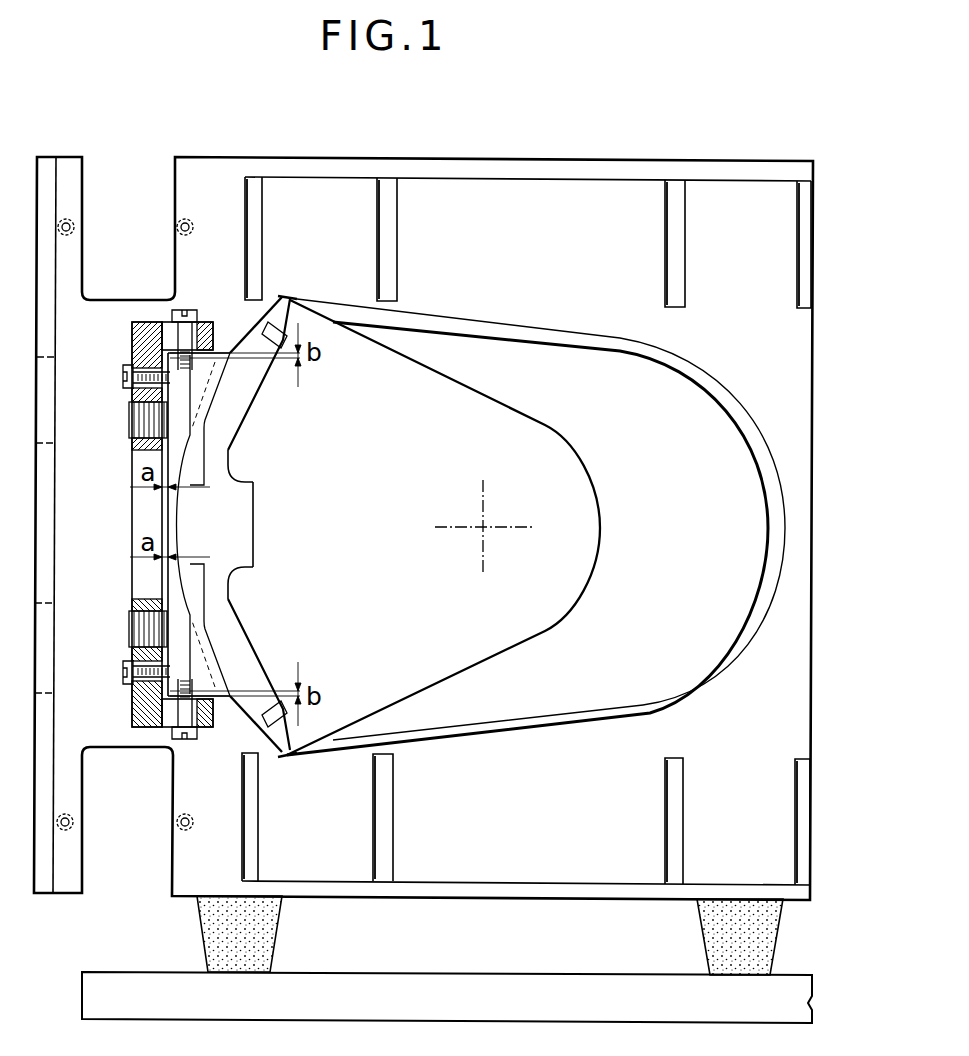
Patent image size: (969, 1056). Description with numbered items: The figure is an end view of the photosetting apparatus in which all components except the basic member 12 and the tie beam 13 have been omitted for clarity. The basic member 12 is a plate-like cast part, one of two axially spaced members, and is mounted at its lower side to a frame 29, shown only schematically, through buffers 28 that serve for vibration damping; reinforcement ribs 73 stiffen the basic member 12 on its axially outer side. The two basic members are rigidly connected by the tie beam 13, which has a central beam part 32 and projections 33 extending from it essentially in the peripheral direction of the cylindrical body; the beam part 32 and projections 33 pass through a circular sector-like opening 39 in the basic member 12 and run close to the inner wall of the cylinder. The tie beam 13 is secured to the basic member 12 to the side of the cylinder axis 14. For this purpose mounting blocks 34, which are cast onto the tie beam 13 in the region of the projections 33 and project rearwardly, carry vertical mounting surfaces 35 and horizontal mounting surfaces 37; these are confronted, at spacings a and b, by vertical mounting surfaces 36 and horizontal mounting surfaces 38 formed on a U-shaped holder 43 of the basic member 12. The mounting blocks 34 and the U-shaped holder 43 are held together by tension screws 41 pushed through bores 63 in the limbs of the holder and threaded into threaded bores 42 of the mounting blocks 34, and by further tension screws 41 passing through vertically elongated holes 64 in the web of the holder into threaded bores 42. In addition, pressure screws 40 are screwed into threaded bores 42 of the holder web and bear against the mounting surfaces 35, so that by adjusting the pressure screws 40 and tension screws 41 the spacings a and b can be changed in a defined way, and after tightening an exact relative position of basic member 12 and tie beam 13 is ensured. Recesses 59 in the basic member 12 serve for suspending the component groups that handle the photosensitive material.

The basic member 12 is at (560, 196).
The tie beam 13 is at (256, 511).
The cylinder axis 14 is at (494, 525).
The buffer 28 is at (285, 951).
The frame 29 is at (465, 982).
The central beam part 32 is at (250, 548).
The projection 33 is at (283, 300).
The mounting block 34 is at (225, 420).
The vertical mounting surface 35 is at (205, 450).
The vertical mounting surface 36 is at (136, 345).
The horizontal mounting surface 37 is at (235, 372).
The horizontal mounting surface 38 is at (167, 322).
The opening 39 is at (525, 415).
The pressure screw 40 is at (130, 420).
The tension screw 41 is at (193, 310).
The threaded bore 42 is at (137, 445).
The U-shaped holder 43 is at (130, 520).
The recess 59 is at (86, 180).
The bore 63 is at (210, 322).
The hole 64 is at (134, 397).
The reinforcement rib 73 is at (250, 240).